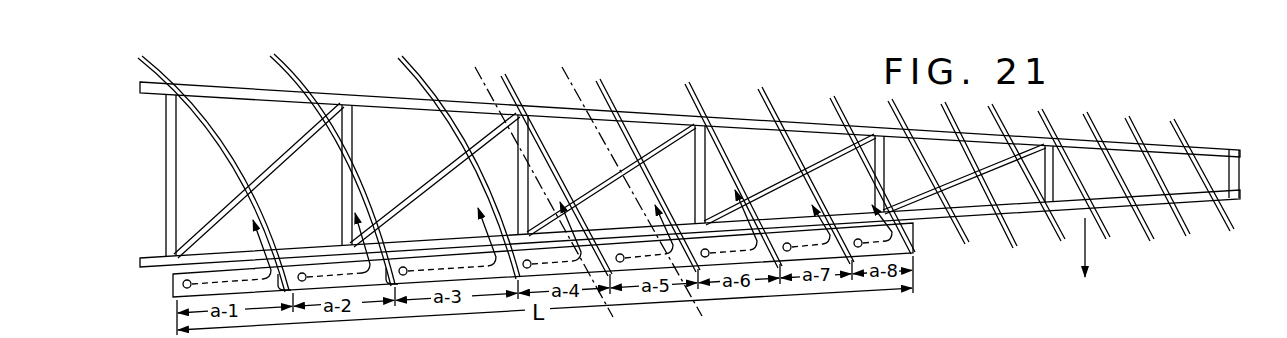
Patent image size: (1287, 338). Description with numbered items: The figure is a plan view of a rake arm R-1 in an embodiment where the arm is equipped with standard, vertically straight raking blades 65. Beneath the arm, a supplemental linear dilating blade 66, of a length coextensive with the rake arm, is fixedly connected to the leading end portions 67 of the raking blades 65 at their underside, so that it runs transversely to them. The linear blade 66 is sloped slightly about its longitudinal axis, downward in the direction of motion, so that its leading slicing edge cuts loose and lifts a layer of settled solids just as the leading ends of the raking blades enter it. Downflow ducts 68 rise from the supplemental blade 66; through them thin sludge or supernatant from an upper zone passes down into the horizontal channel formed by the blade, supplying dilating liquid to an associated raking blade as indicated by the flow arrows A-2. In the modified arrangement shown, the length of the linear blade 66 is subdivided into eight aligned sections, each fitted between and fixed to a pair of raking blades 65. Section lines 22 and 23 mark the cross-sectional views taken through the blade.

The raking blades 65 is at (403, 66).
The supplemental linear dilating blade 66 is at (895, 247).
The leading end portions 67 is at (281, 274).
The downflow ducts 68 is at (181, 287).
The section line 22 is at (562, 67).
The section line 23 is at (475, 67).
The flow arrows A-2 is at (483, 212).
The rake arm R-1 is at (1195, 115).